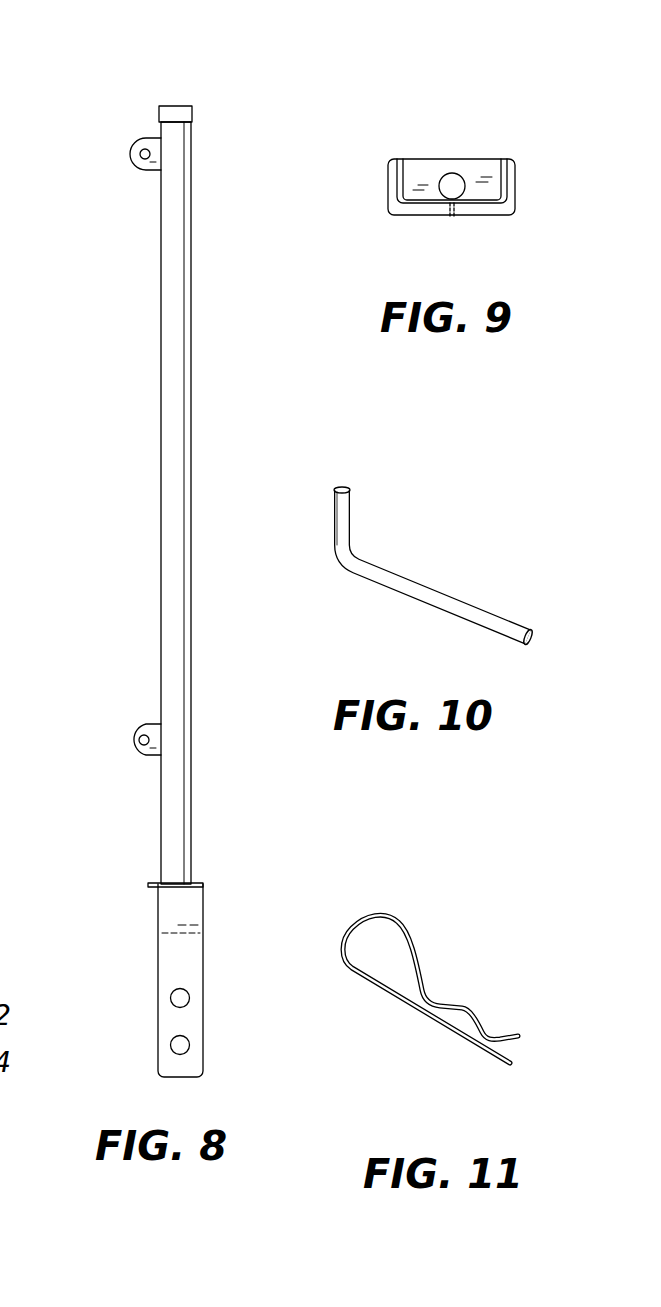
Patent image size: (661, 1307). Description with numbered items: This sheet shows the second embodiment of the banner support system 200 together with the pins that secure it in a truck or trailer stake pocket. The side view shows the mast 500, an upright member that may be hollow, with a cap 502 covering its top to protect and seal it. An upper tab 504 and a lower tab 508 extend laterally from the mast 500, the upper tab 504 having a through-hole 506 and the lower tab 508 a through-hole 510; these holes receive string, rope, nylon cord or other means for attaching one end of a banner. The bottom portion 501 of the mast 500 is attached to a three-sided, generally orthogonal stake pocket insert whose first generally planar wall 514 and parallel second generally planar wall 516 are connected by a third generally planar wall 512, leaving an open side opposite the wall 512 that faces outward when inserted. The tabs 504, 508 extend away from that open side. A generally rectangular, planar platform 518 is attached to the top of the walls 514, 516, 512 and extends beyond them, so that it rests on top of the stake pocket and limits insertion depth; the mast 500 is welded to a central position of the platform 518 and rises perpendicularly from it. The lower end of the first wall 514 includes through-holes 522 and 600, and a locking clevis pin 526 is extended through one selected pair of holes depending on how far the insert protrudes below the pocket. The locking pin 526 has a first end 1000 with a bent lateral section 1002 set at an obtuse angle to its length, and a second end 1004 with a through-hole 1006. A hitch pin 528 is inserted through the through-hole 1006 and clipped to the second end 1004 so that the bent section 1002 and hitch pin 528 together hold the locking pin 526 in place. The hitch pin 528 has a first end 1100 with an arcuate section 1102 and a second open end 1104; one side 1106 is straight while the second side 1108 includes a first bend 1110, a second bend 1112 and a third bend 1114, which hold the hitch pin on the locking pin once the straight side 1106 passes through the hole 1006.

In FIG. 8, the system 200 is at (104, 430).
In FIG. 8, the mast 500 is at (190, 545).
In FIG. 9, the mast 500 is at (436, 175).
In FIG. 8, the bottom portion 501 is at (268, 877).
In FIG. 9, the bottom portion 501 is at (462, 65).
In FIG. 8, the cap 502 is at (176, 106).
In FIG. 8, the upper tab 504 is at (143, 138).
In FIG. 8, the through-hole 506 is at (100, 155).
In FIG. 8, the lower tab 508 is at (139, 726).
In FIG. 9, the lower tab 508 is at (452, 217).
In FIG. 8, the through-hole 510 is at (105, 742).
In FIG. 9, the third generally planar wall 512 is at (473, 205).
In FIG. 8, the first generally planar wall 514 is at (190, 952).
In FIG. 9, the first generally planar wall 514 is at (388, 183).
In FIG. 9, the second generally planar wall 516 is at (509, 182).
In FIG. 8, the platform 518 is at (173, 892).
In FIG. 9, the platform 518 is at (418, 216).
In FIG. 8, the through-hole 522 is at (238, 1045).
In FIG. 8, the through-hole 600 is at (238, 997).
In FIG. 10, the locking clevis pin 526 is at (419, 545).
In FIG. 10, the first end 1000 is at (419, 520).
In FIG. 10, the bent lateral section 1002 is at (334, 510).
In FIG. 10, the second end 1004 is at (532, 562).
In FIG. 10, the through-hole 1006 is at (498, 662).
In FIG. 11, the hitch pin 528 is at (467, 978).
In FIG. 11, the first end 1100 is at (467, 962).
In FIG. 11, the arcuate section 1102 is at (358, 926).
In FIG. 11, the second open end 1104 is at (550, 1017).
In FIG. 11, the straight side 1106 is at (428, 1022).
In FIG. 11, the second side 1108 is at (523, 1040).
In FIG. 11, the first bend 1110 is at (427, 977).
In FIG. 11, the second bend 1112 is at (464, 1006).
In FIG. 11, the third bend 1114 is at (487, 1036).